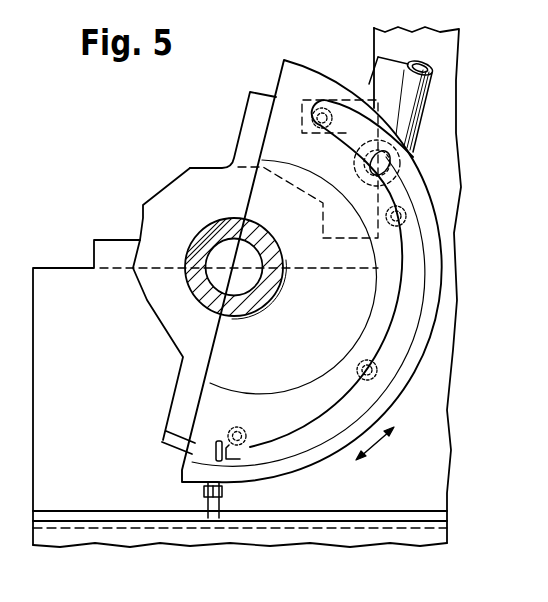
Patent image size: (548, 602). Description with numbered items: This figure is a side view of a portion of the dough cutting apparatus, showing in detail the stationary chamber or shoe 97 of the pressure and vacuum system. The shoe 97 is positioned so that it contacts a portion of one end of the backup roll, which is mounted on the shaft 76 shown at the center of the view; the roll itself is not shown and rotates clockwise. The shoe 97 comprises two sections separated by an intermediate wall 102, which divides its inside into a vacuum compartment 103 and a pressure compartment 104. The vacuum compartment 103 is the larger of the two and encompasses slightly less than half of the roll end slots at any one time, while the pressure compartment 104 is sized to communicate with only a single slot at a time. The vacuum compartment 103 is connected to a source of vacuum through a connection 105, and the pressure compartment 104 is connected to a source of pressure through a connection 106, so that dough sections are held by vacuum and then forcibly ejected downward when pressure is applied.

The shaft 76 is at (222, 254).
The stationary shoe 97 is at (377, 303).
The intermediate wall 102 is at (226, 442).
The vacuum compartment 103 is at (397, 351).
The pressure compartment 104 is at (200, 452).
The connection 105 is at (396, 75).
The connection 106 is at (222, 491).